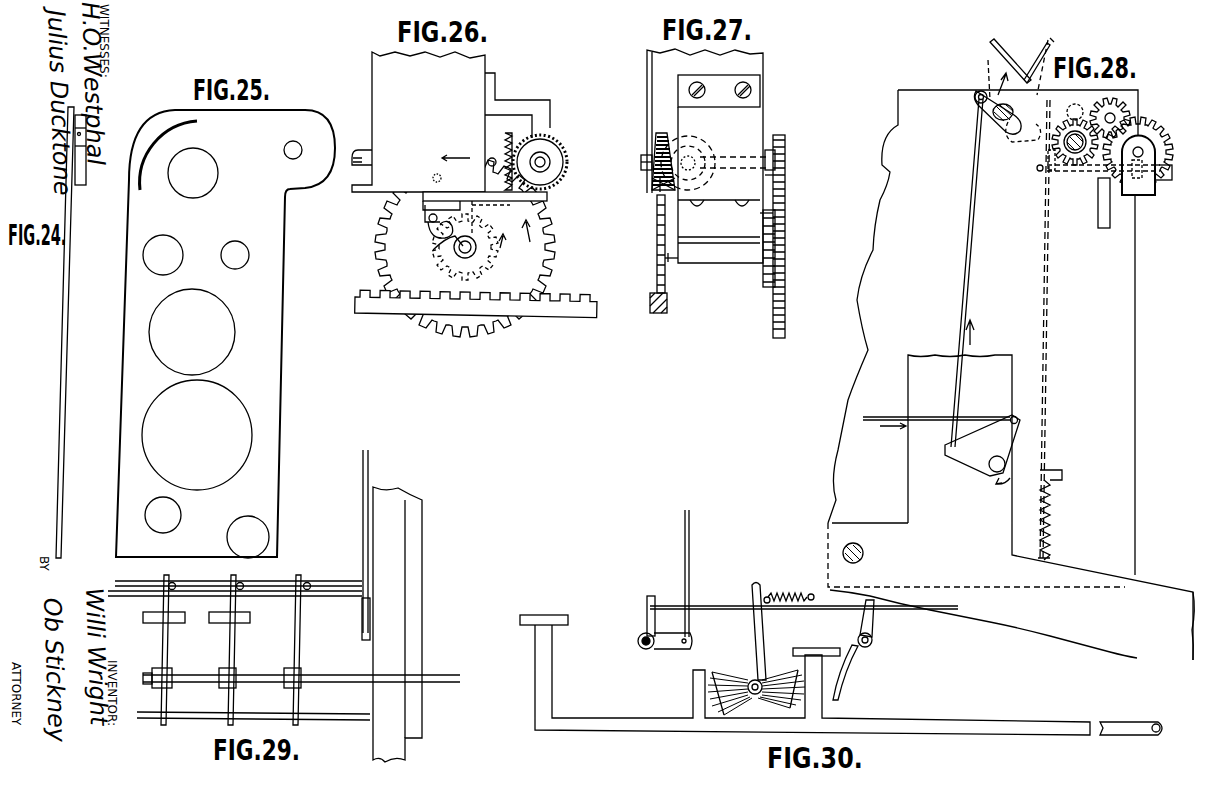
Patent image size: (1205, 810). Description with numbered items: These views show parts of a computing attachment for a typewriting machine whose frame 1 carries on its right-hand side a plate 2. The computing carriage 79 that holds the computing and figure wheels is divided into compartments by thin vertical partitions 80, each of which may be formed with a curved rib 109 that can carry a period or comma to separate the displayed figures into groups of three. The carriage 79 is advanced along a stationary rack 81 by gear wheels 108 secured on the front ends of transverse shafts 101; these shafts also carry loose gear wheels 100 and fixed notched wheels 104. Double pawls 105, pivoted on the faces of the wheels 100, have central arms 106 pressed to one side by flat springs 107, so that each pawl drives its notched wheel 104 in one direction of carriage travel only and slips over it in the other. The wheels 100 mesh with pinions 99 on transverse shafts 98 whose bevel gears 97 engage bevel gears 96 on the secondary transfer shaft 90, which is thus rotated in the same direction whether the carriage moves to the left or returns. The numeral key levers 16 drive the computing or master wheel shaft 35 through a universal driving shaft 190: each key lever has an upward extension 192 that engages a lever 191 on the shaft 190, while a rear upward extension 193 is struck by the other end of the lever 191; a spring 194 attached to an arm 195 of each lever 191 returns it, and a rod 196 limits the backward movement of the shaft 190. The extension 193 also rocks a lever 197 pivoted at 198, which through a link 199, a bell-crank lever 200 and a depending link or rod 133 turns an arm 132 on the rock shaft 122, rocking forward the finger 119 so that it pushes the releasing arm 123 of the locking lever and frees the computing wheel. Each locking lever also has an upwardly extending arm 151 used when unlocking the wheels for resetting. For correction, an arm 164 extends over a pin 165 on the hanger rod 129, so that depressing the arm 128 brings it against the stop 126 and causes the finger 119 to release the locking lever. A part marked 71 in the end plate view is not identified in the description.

In FIG. 29, the frame 1 is at (383, 700).
In FIG. 29, the plate 2 is at (423, 585).
In FIG. 29, the numeral key lever 16 is at (168, 652).
In FIG. 30, the numeral key lever 16 is at (552, 670).
In FIG. 28, the master wheel shaft 35 is at (1066, 145).
In FIG. 28, the shaft 71 is at (1075, 155).
In FIG. 26, the computing carriage 79 is at (451, 126).
In FIG. 27, the computing carriage 79 is at (650, 196).
In FIG. 24, the partition 80 is at (62, 470).
In FIG. 25, the partition 80 is at (278, 386).
In FIG. 26, the rack 81 is at (555, 312).
In FIG. 27, the rack 81 is at (658, 314).
In FIG. 26, the secondary transfer shaft 90 is at (360, 153).
In FIG. 27, the secondary transfer shaft 90 is at (698, 155).
In FIG. 26, the bevel gear 96 is at (500, 140).
In FIG. 27, the bevel gear 96 is at (672, 142).
In FIG. 26, the bevel gear 97 is at (561, 152).
In FIG. 27, the bevel gear 97 is at (652, 178).
In FIG. 26, the transverse shaft 98 is at (550, 163).
In FIG. 27, the transverse shaft 98 is at (645, 162).
In FIG. 27, the pinion 99 is at (777, 161).
In FIG. 26, the gear wheel 100 is at (465, 247).
In FIG. 27, the gear wheel 100 is at (787, 236).
In FIG. 26, the transverse shaft 101 is at (458, 252).
In FIG. 27, the transverse shaft 101 is at (668, 262).
In FIG. 26, the notched wheel 104 is at (432, 249).
In FIG. 27, the notched wheel 104 is at (763, 268).
In FIG. 26, the double pawl 105 is at (436, 236).
In FIG. 27, the double pawl 105 is at (760, 214).
In FIG. 26, the central arm 106 is at (429, 218).
In FIG. 27, the central arm 106 is at (658, 258).
In FIG. 26, the flat spring 107 is at (428, 200).
In FIG. 27, the flat spring 107 is at (766, 193).
In FIG. 26, the gear wheel 108 is at (521, 242).
In FIG. 24, the curved rib 109 is at (86, 136).
In FIG. 25, the curved rib 109 is at (197, 122).
In FIG. 28, the finger 119 is at (988, 62).
In FIG. 28, the rock shaft 122 is at (998, 114).
In FIG. 28, the releasing arm 123 is at (991, 43).
In FIG. 28, the stop 126 is at (1012, 140).
In FIG. 28, the arm 128 is at (1085, 110).
In FIG. 28, the hanger rod 129 is at (1046, 312).
In FIG. 28, the arm 132 is at (975, 97).
In FIG. 28, the link 133 is at (967, 290).
In FIG. 29, the link 133 is at (363, 520).
In FIG. 30, the link 133 is at (685, 572).
In FIG. 28, the upwardly extending arm 151 is at (1047, 40).
In FIG. 28, the arm 164 is at (1040, 172).
In FIG. 28, the pin 165 is at (1046, 168).
In FIG. 29, the universal driving shaft 190 is at (440, 684).
In FIG. 30, the universal driving shaft 190 is at (753, 693).
In FIG. 30, the lever 191 is at (748, 676).
In FIG. 29, the upward extension 192 is at (295, 697).
In FIG. 30, the upward extension 192 is at (693, 678).
In FIG. 29, the rear upward extension 193 is at (295, 650).
In FIG. 30, the rear upward extension 193 is at (812, 647).
In FIG. 29, the spring 194 is at (245, 584).
In FIG. 30, the spring 194 is at (797, 592).
In FIG. 29, the arm 195 is at (236, 605).
In FIG. 30, the arm 195 is at (760, 618).
In FIG. 30, the rod 196 is at (767, 596).
In FIG. 30, the lever 197 is at (843, 672).
In FIG. 30, the pivot 198 is at (873, 641).
In FIG. 28, the link 199 is at (908, 424).
In FIG. 29, the link 199 is at (361, 605).
In FIG. 30, the link 199 is at (706, 608).
In FIG. 28, the bell-crank lever 200 is at (982, 449).
In FIG. 29, the bell-crank lever 200 is at (371, 610).
In FIG. 30, the bell-crank lever 200 is at (647, 620).